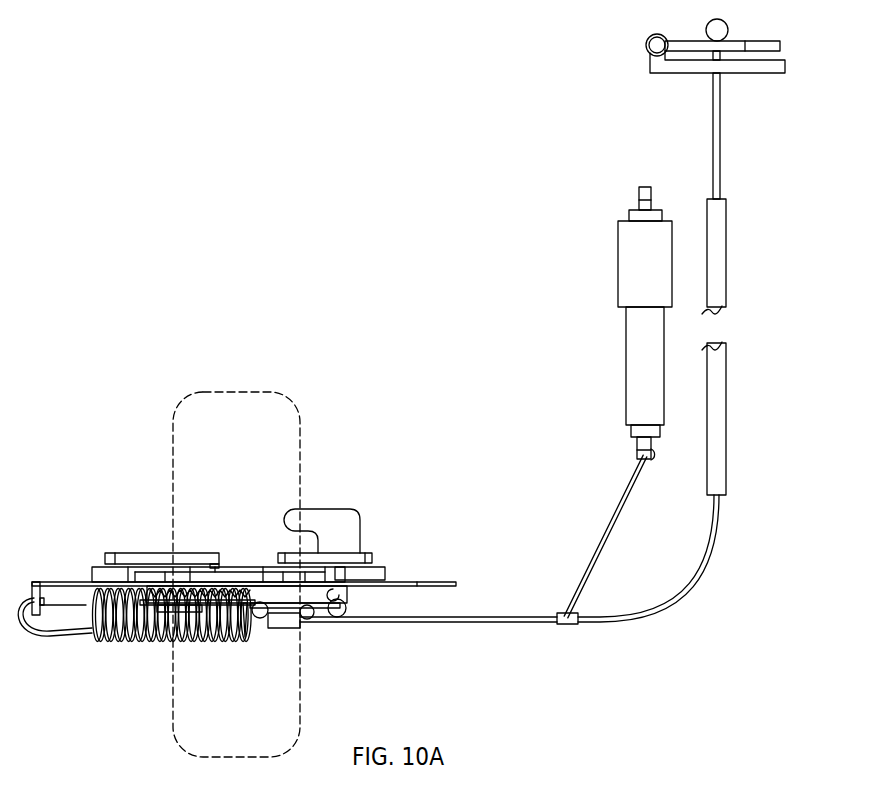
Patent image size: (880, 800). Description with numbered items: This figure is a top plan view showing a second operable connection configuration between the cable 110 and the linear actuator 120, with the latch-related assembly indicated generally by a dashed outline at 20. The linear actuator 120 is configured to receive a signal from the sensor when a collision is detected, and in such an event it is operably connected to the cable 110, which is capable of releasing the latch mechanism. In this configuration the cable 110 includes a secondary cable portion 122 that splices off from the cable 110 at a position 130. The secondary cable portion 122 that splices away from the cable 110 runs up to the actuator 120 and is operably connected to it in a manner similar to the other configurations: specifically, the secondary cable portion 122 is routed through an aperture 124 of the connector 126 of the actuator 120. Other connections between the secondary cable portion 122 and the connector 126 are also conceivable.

The device assembly 20 is at (258, 391).
The cable 110 is at (683, 592).
The linear actuator 120 is at (626, 364).
The secondary cable portion 122 is at (590, 553).
The aperture 124 is at (638, 451).
The connector 126 is at (652, 463).
The position 130 is at (570, 626).